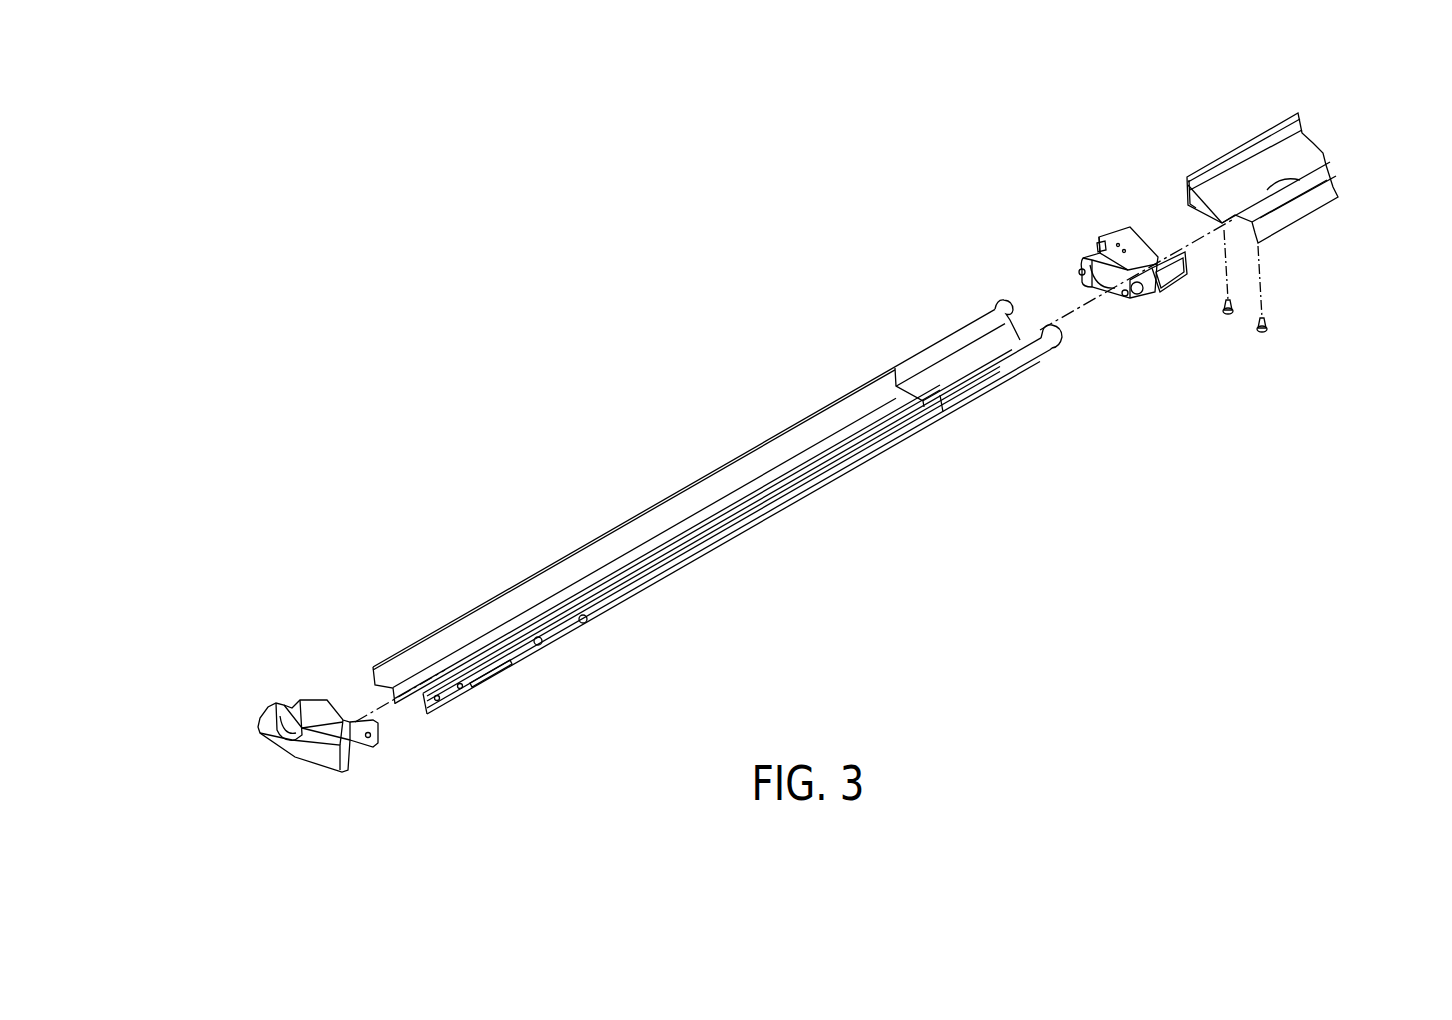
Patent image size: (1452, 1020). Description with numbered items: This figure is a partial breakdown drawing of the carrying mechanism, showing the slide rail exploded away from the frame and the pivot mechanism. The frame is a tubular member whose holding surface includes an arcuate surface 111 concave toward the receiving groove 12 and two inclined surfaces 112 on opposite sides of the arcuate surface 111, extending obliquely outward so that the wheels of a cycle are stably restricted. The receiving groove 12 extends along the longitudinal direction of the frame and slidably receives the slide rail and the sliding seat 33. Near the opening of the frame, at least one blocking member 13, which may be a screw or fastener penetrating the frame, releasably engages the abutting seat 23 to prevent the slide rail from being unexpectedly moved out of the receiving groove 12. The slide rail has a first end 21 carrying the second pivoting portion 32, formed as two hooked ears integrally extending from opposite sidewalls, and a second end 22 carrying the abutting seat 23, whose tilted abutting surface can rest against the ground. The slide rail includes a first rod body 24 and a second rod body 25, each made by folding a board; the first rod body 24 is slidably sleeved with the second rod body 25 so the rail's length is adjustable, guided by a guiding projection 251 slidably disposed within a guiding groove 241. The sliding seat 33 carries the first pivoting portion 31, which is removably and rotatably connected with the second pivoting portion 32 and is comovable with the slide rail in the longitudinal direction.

The receiving groove 12 is at (1186, 200).
The inclined surfaces 112 is at (1245, 168).
The arcuate surface 111 is at (1325, 208).
The blocking member 13 is at (1272, 330).
The first pivoting portion 31 is at (1143, 298).
The sliding seat 33 is at (1100, 240).
The second pivoting portion 32 is at (1002, 298).
The second rod body 25 is at (940, 362).
The first end 21 is at (1050, 364).
The first rod body 24 is at (497, 612).
The second end 22 is at (372, 645).
The abutting seat 23 is at (268, 712).
The guiding projection 251 is at (590, 623).
The guiding groove 241 is at (505, 662).